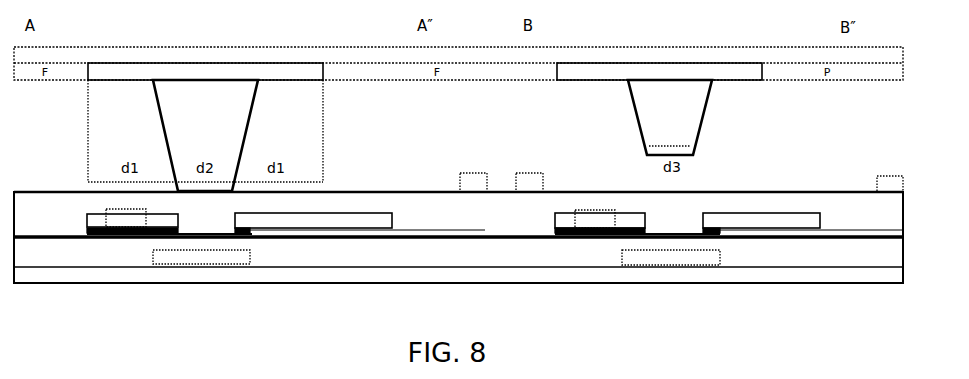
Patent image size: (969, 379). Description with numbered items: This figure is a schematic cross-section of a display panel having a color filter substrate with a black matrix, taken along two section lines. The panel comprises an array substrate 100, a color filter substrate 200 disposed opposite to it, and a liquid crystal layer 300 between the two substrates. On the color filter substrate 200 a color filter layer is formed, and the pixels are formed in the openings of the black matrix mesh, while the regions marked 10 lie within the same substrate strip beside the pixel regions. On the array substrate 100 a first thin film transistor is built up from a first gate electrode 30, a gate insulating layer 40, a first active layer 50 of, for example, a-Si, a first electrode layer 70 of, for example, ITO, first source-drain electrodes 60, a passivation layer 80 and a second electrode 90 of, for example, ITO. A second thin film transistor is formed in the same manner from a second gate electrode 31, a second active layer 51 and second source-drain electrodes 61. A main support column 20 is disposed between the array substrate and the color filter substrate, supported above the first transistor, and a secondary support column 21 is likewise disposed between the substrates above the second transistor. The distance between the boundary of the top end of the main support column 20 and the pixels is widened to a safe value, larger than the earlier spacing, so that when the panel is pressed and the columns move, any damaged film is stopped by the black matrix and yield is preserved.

The color filter substrate 200 is at (458, 63).
The light emitting regions 10 is at (425, 71).
The main support column 20 is at (205, 135).
The secondary support column 21 is at (670, 117).
The liquid crystal layer 300 is at (815, 110).
The second electrode 90 is at (472, 175).
The passivation layer 80 is at (458, 237).
The first source-drain electrodes 60 is at (239, 219).
The first active layer 50 is at (169, 223).
The first electrode layer 70 is at (431, 230).
The second source-drain electrodes 61 is at (687, 219).
The second active layer 51 is at (637, 225).
The first gate electrode 30 is at (201, 257).
The second gate electrode 31 is at (671, 257).
The gate insulating layer 40 is at (458, 252).
The array substrate 100 is at (458, 276).